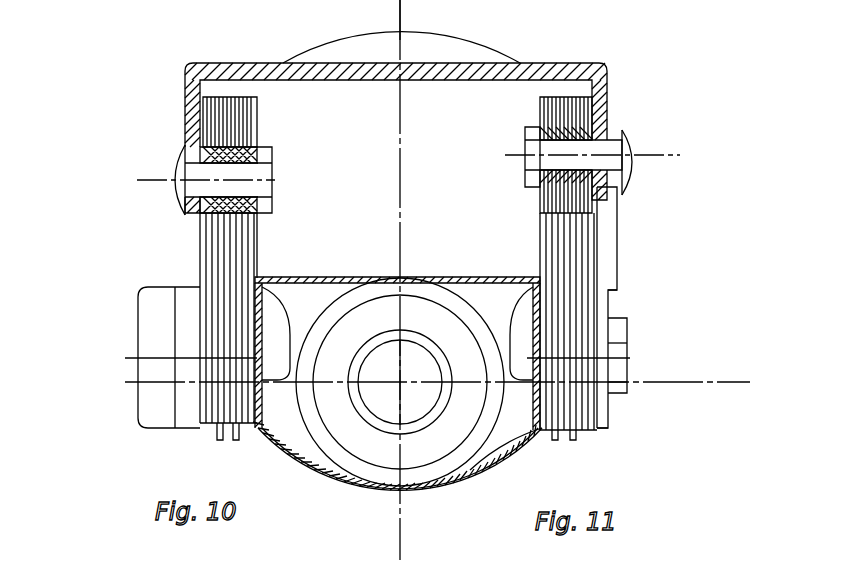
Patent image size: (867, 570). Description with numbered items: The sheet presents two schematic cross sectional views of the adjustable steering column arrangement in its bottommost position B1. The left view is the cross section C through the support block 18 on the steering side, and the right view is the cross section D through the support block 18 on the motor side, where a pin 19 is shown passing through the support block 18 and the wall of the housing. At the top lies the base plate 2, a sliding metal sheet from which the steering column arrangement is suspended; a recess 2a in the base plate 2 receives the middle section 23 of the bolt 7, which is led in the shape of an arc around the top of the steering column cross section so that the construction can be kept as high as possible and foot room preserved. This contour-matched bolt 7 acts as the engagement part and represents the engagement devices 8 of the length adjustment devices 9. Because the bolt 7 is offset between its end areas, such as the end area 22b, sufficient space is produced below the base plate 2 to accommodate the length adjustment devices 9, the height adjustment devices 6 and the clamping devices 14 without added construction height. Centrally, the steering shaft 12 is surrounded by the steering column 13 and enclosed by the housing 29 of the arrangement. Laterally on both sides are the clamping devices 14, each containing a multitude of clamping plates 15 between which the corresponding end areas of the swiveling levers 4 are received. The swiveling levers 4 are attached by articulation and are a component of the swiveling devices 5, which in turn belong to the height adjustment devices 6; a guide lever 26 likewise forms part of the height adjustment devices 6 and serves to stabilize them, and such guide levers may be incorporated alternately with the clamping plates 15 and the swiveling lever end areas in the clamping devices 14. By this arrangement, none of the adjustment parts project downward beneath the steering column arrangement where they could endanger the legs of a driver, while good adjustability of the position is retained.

In FIG. 11, the base plate 2 is at (603, 68).
In FIG. 10, the recess 2a is at (462, 48).
In FIG. 10, the swiveling levers 4 is at (218, 441).
In FIG. 11, the swiveling levers 4 is at (556, 442).
In FIG. 11, the swiveling devices 5 is at (628, 306).
In FIG. 10, the height adjustment devices 6 is at (150, 262).
In FIG. 11, the bolt 7 is at (478, 265).
In FIG. 10, the engagement devices 8 is at (328, 262).
In FIG. 11, the length adjustment devices 9 is at (612, 408).
In FIG. 10, the steering shaft 12 is at (365, 20).
In FIG. 11, the steering shaft 12 is at (432, 362).
In FIG. 10, the steering column 13 is at (347, 463).
In FIG. 10, the clamping devices 14 is at (195, 393).
In FIG. 11, the clamping plates 15 is at (628, 197).
In FIG. 10, the support block 18 is at (272, 148).
In FIG. 11, the support block 18 is at (530, 128).
In FIG. 10, the pin 19 is at (186, 168).
In FIG. 11, the pin 19 is at (603, 148).
In FIG. 11, the end area 22b is at (618, 373).
In FIG. 10, the middle section 23 is at (360, 247).
In FIG. 10, the guide lever 26 is at (240, 267).
In FIG. 11, the housing 29 is at (483, 470).
In FIG. 11, the lower position B1 is at (657, 290).
In FIG. 10, the cross section C is at (158, 104).
In FIG. 11, the cross section D is at (502, 210).